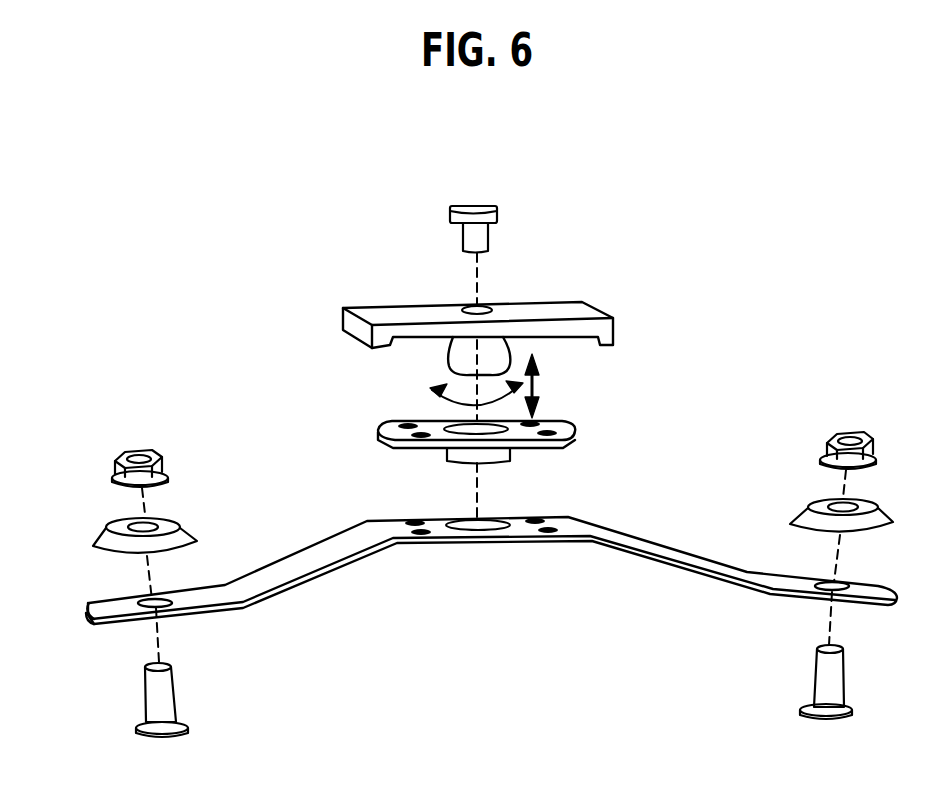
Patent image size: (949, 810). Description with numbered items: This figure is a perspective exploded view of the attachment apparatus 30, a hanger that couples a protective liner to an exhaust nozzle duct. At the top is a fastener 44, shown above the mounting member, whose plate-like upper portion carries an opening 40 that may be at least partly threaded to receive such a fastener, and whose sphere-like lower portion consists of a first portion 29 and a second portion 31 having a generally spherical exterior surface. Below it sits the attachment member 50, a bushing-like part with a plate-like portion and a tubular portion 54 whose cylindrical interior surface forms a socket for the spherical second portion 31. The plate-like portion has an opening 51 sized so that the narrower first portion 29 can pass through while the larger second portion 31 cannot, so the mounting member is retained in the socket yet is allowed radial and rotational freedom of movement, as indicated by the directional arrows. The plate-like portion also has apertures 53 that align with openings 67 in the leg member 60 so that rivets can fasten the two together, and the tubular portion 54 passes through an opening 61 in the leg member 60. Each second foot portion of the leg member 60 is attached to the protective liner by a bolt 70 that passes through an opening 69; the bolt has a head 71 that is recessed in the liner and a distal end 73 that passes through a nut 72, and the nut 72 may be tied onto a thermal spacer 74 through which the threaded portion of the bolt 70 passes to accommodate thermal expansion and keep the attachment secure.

The first portion of the second portion of the mounting member 29 is at (452, 347).
The attachment apparatus 30 is at (507, 297).
The second portion of the second portion of the mounting member 31 is at (450, 374).
The opening 40 is at (470, 305).
The screw 44 is at (473, 212).
The attachment member 50 is at (505, 427).
The opening 51 is at (462, 427).
The apertures 53 is at (550, 431).
The tubular portion 54 is at (447, 455).
The leg member 60 is at (491, 548).
The opening 61 is at (470, 523).
The openings 67 is at (538, 520).
The opening 69 is at (827, 582).
The bolt 70 is at (483, 688).
The head 71 is at (145, 730).
The nut 72 is at (113, 464).
The distal end 73 is at (150, 663).
The thermal spacer 74 is at (186, 530).